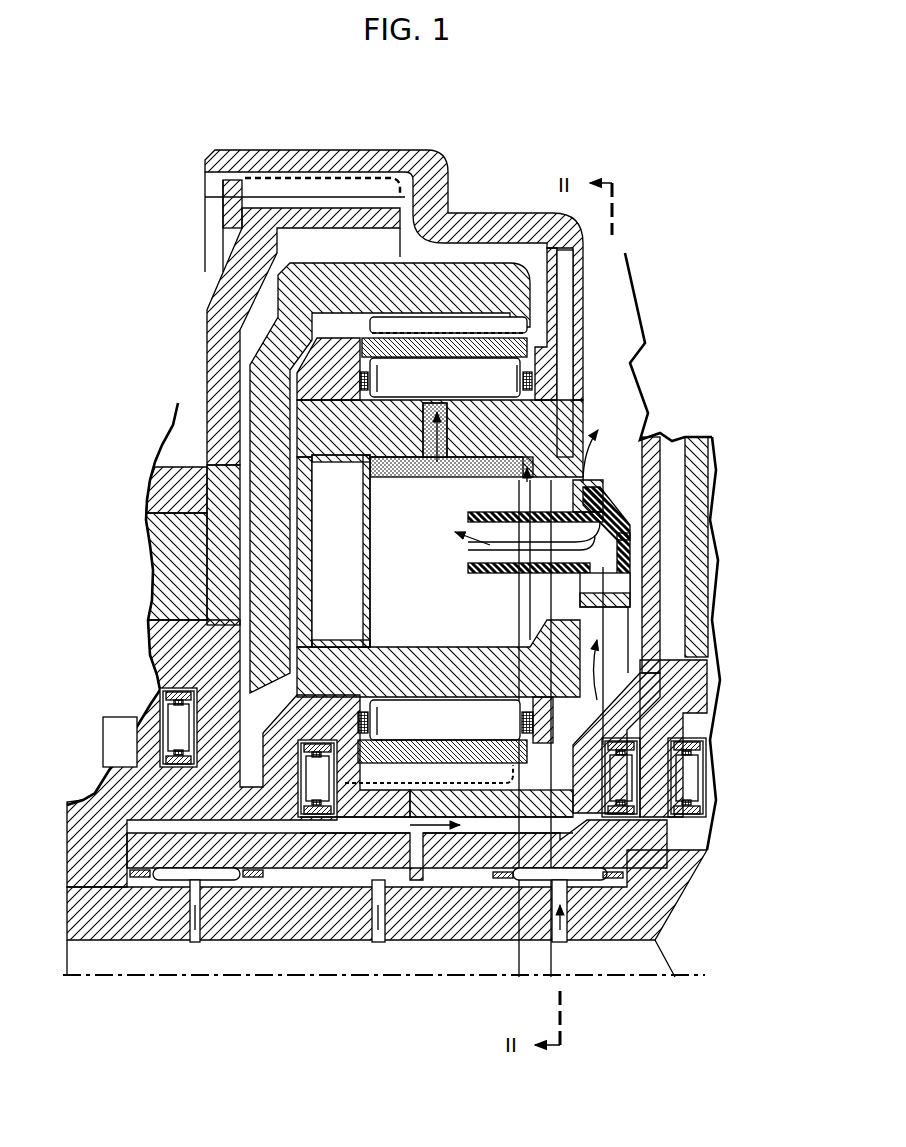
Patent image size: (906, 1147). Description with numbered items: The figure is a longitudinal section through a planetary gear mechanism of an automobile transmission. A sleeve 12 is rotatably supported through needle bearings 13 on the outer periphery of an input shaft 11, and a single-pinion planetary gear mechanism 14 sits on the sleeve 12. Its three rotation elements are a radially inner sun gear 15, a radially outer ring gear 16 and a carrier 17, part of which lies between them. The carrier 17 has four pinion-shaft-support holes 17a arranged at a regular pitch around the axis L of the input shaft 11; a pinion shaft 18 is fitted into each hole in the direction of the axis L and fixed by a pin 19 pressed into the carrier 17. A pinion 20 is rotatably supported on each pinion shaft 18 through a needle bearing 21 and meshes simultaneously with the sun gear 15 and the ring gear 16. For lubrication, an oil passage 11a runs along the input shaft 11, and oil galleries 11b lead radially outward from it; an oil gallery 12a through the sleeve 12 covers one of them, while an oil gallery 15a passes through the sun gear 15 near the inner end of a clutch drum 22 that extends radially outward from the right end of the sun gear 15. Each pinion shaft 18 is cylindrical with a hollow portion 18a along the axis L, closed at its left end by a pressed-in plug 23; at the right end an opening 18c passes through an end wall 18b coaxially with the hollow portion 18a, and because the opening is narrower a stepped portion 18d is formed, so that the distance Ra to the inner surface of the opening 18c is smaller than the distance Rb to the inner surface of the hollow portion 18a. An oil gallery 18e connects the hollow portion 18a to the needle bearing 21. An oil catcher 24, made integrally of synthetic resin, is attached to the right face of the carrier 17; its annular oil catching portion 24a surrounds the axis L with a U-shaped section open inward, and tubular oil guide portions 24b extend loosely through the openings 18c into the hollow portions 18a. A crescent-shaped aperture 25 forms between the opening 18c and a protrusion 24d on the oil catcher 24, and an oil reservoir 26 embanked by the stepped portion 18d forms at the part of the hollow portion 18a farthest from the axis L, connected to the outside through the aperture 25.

The input shaft 11 is at (88, 878).
The oil passage 11a is at (657, 942).
The oil galleries 11b is at (200, 943).
The sleeve 12 is at (420, 862).
The oil gallery 12a is at (454, 874).
The needle bearings 13 is at (174, 873).
The single-pinion planetary gear mechanism 14 is at (495, 252).
The sun gear 15 is at (460, 693).
The oil gallery 15a is at (521, 720).
The ring gear 16 is at (333, 322).
The carrier 17 is at (232, 700).
The pinion-shaft-support holes 17a is at (300, 415).
The pinion shaft 18 is at (296, 553).
The hollow portion 18a is at (367, 533).
The end wall 18b is at (580, 672).
The opening 18c is at (627, 602).
The stepped portion 18d is at (533, 470).
The oil gallery 18e is at (467, 387).
The pin 19 is at (565, 345).
The pinion 20 is at (457, 327).
The needle bearing 21 is at (410, 383).
The clutch drum 22 is at (657, 515).
The plug 23 is at (365, 548).
The oil catcher 24 is at (635, 563).
The oil catching portion 24a is at (625, 583).
The oil guide portions 24b is at (493, 573).
The protrusion 24d is at (617, 500).
The aperture 25 is at (657, 438).
The oil reservoir 26 is at (446, 381).
The distance from the axis to the inner peripheral surface of the opening Ra is at (558, 664).
The distance from the axis to the inner peripheral surface of the hollow portion Rb is at (517, 669).
The axis L is at (100, 977).